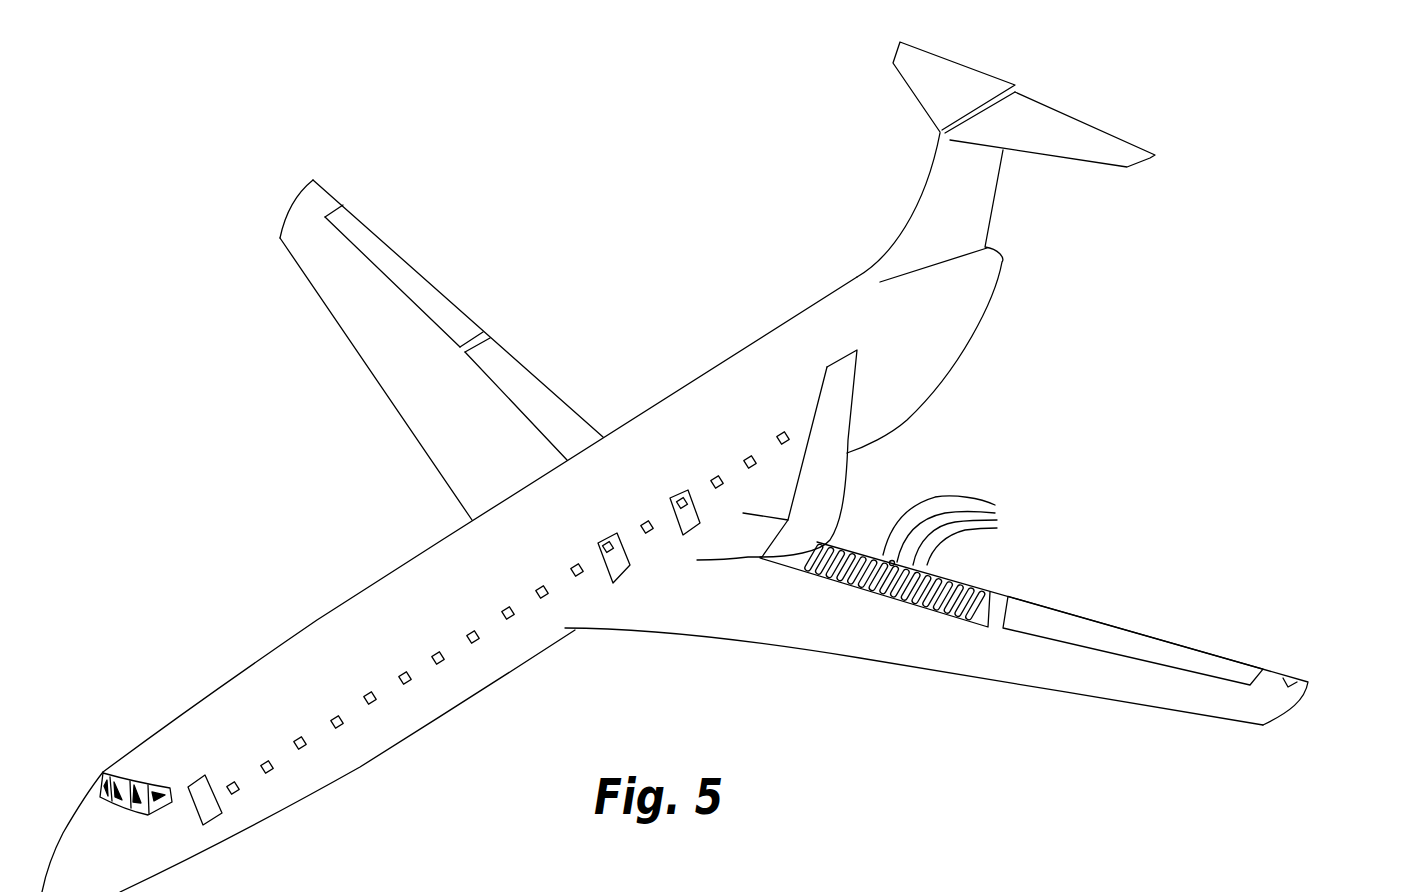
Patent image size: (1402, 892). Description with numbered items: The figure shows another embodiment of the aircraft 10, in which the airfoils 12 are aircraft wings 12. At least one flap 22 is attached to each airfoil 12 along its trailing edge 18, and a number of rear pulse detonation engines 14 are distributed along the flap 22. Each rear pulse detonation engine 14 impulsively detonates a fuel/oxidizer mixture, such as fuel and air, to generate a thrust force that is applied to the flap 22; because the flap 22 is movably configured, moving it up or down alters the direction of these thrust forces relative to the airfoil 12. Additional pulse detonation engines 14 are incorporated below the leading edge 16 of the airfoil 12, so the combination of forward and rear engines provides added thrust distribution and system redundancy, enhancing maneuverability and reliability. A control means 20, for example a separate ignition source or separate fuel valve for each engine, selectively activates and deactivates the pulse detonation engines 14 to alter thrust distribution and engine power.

The aircraft 10 is at (1081, 442).
The airfoil 12 is at (460, 400).
The pulse detonation engine 14 is at (960, 530).
The leading edge 16 is at (803, 644).
The trailing edge 18 is at (1298, 680).
The control means 20 is at (905, 594).
The flap 22 is at (447, 313).